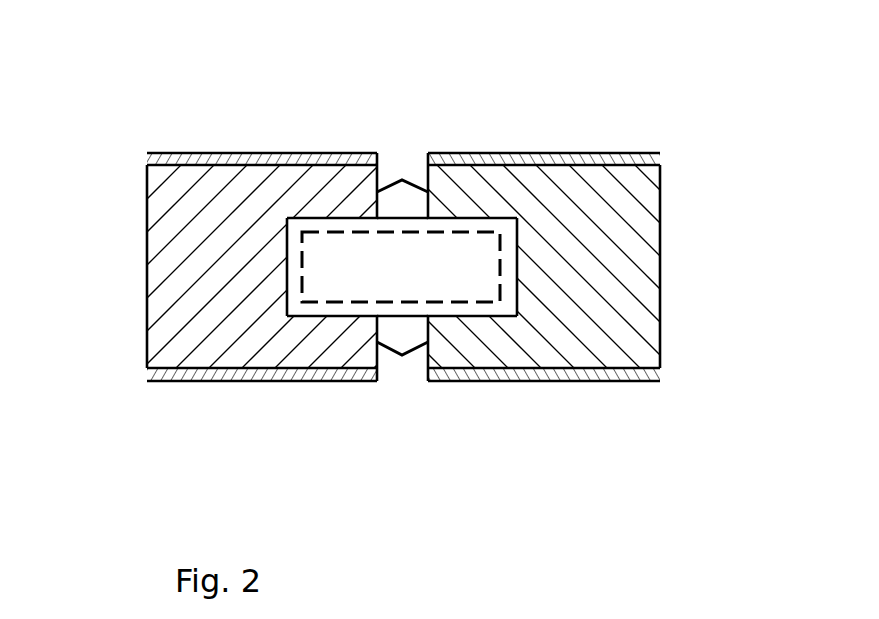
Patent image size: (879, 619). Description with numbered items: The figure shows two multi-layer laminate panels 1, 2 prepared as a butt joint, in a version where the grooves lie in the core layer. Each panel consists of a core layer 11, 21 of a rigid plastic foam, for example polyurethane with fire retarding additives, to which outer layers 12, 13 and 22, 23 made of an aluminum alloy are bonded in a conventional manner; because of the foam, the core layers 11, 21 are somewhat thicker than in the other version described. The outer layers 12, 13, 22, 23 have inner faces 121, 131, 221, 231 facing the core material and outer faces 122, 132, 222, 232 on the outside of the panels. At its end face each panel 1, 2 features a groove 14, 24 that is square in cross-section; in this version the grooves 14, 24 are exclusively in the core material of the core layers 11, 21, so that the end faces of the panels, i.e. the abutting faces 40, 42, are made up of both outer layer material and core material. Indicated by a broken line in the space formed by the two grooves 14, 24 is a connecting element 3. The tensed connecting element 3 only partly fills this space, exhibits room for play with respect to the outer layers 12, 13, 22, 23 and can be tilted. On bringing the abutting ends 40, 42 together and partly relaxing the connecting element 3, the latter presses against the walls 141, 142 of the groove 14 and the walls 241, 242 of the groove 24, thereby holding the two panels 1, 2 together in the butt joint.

The multi-layer laminate panel 1 is at (538, 272).
The core layer 11 is at (635, 193).
The outer layer 12 is at (544, 93).
The inner face 121 is at (505, 153).
The outer face 122 is at (595, 153).
The outer layer 13 is at (544, 445).
The inner face 131 is at (508, 381).
The outer face 132 is at (623, 381).
The groove 14 is at (591, 271).
The wall 141 is at (456, 316).
The wall 142 is at (453, 218).
The multi-layer laminate panel 2 is at (288, 272).
The core layer 21 is at (173, 190).
The outer layer 22 is at (262, 93).
The inner face 221 is at (300, 153).
The outer face 222 is at (207, 153).
The outer layer 23 is at (262, 445).
The inner face 231 is at (302, 381).
The outer face 232 is at (187, 381).
The groove 24 is at (213, 271).
The wall 241 is at (352, 316).
The wall 242 is at (352, 218).
The connecting element 3 is at (478, 267).
The abutting face 40 is at (402, 180).
The abutting face 42 is at (402, 355).